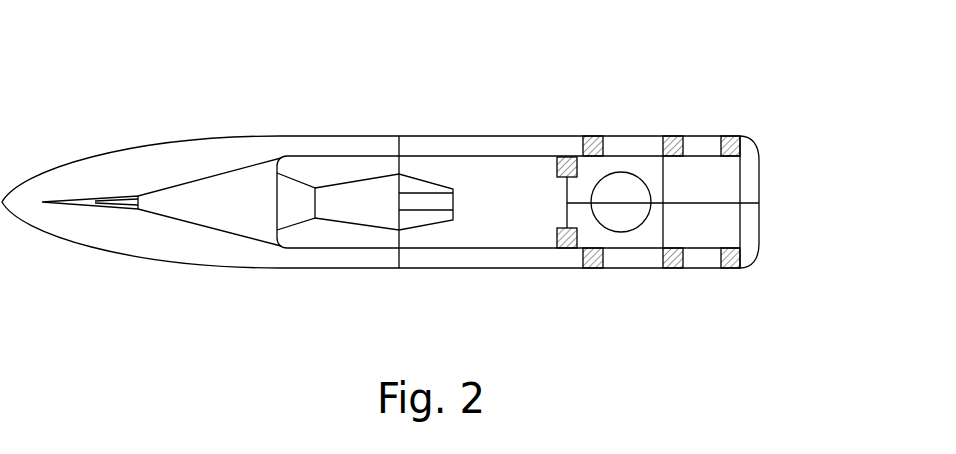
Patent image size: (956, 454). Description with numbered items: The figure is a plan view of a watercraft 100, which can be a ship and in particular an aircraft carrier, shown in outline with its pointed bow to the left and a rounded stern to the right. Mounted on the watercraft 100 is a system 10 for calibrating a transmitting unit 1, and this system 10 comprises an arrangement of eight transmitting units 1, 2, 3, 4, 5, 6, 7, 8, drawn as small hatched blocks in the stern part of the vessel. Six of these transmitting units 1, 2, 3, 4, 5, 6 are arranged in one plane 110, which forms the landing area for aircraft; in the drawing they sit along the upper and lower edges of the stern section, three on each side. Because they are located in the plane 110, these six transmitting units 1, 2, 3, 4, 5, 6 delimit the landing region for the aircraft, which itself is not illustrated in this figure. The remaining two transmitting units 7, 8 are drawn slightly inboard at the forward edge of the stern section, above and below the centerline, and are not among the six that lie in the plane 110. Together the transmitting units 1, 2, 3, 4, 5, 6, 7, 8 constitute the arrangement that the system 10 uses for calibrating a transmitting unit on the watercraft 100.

The watercraft 100 is at (157, 76).
The system 10 is at (784, 141).
The plane 110 is at (727, 225).
The transmitting unit 1 is at (595, 262).
The transmitting unit 2 is at (672, 262).
The transmitting unit 3 is at (731, 262).
The transmitting unit 4 is at (731, 142).
The transmitting unit 5 is at (672, 142).
The transmitting unit 6 is at (595, 142).
The transmitting unit 7 is at (567, 152).
The transmitting unit 8 is at (567, 252).